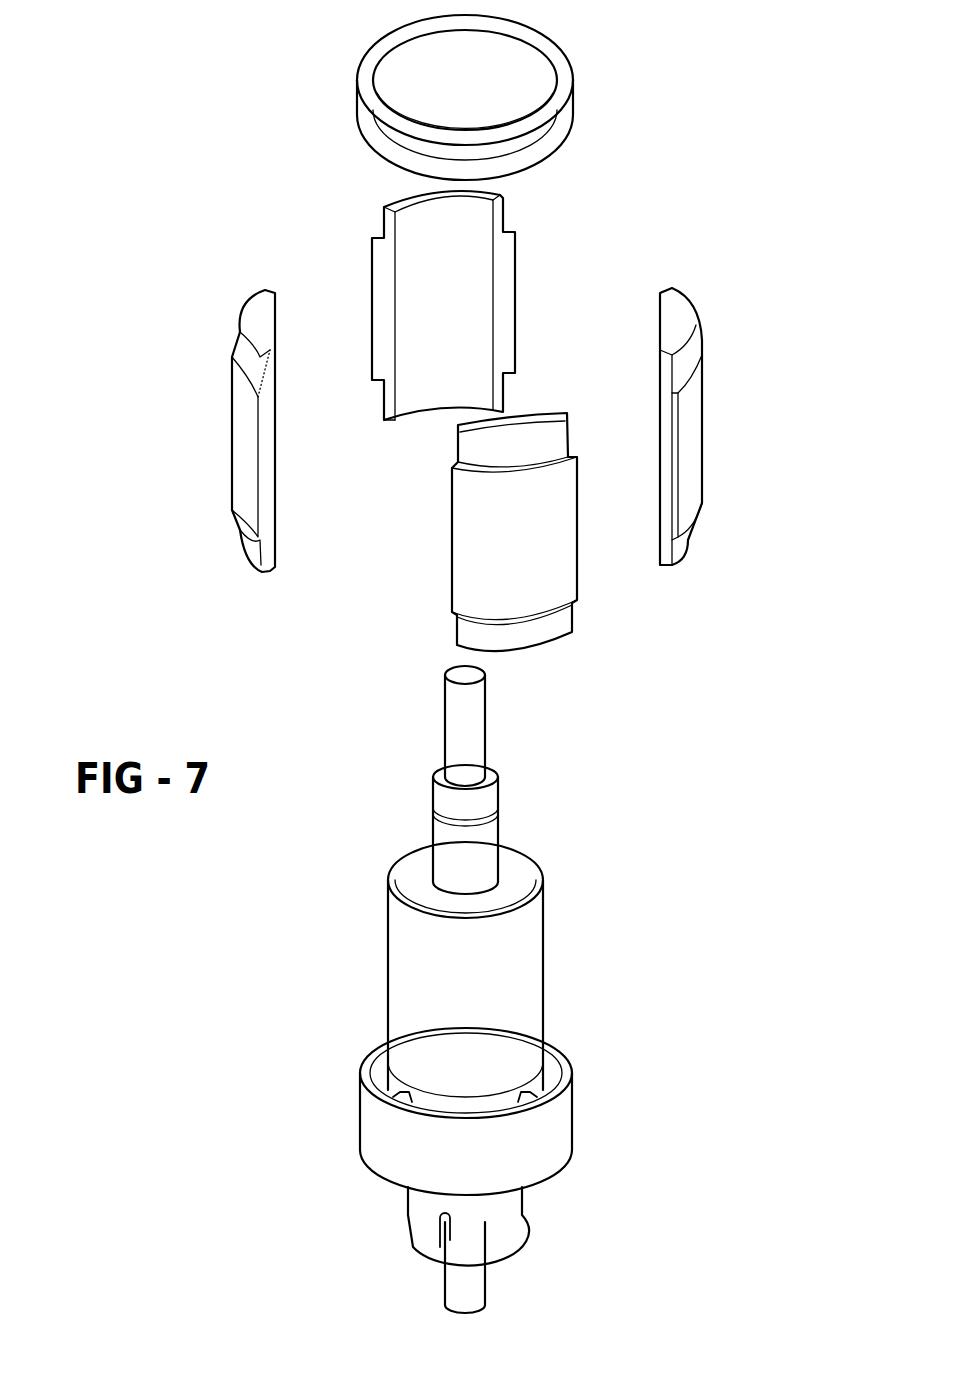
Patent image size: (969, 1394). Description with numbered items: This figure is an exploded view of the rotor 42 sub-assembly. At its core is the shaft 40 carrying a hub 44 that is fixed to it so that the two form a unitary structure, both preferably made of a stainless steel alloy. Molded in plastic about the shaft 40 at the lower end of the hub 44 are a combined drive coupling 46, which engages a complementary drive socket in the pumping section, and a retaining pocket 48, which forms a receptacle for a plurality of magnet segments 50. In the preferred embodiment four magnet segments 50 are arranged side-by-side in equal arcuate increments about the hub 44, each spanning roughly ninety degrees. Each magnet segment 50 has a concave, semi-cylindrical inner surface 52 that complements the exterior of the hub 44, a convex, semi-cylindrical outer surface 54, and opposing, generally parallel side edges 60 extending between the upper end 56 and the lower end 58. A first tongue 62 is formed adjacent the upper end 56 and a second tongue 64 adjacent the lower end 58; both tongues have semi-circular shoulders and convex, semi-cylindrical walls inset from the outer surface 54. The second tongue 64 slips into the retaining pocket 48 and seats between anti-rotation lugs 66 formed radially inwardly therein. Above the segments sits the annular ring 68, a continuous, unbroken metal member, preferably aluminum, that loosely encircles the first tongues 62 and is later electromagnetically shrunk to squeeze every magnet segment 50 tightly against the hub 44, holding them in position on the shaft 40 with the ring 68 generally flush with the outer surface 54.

The shaft 40 is at (480, 738).
The rotor 42 is at (198, 146).
The hub section 44 is at (390, 995).
The drive coupling 46 is at (420, 1220).
The retaining pocket 48 is at (546, 1038).
The magnet segment 50 is at (516, 224).
The inner surface 52 is at (267, 322).
The outer surface 54 is at (245, 457).
The upper end 56 is at (395, 198).
The lower end 58 is at (375, 425).
The side edge 60 is at (508, 268).
The first tongue 62 is at (508, 207).
The second tongue 64 is at (380, 402).
The anti-rotation lug 66 is at (417, 1097).
The annular ring 68 is at (575, 96).